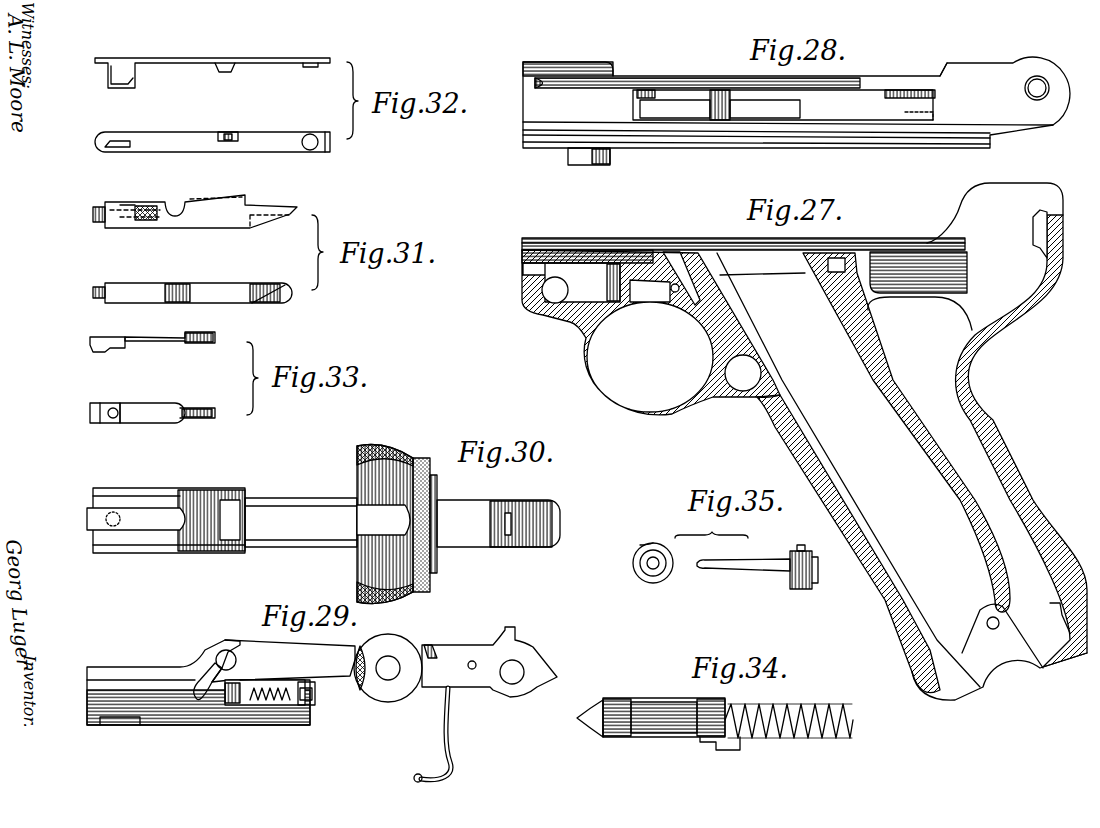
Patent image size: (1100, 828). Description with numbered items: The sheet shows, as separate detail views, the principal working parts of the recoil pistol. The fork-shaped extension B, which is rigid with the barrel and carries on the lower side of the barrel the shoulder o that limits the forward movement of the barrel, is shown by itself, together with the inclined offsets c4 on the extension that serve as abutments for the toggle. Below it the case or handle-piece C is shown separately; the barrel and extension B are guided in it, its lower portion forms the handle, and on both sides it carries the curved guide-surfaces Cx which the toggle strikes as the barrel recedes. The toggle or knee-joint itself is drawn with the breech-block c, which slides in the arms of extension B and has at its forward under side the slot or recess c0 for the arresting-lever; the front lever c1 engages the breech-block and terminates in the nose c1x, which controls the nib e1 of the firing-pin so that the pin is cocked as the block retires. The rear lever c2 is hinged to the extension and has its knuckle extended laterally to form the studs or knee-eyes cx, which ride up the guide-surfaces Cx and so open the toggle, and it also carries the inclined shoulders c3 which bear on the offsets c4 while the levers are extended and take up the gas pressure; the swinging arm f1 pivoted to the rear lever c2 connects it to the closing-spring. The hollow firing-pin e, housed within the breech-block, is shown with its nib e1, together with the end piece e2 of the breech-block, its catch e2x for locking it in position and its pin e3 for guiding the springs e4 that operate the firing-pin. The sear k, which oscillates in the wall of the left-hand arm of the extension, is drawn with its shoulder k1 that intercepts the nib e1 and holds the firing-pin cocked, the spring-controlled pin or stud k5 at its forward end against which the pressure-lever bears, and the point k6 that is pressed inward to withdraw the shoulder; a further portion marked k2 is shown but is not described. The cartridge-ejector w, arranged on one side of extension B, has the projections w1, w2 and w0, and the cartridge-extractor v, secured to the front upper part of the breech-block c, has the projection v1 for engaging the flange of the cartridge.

In FIG. 28, the fork-shaped barrel extension B is at (796, 102).
In FIG. 28, the shoulder o is at (578, 160).
In FIG. 28, the inclined offsets c4 is at (948, 70).
In FIG. 27, the handle-piece C is at (982, 345).
In FIG. 27, the curved guide-surfaces Cx is at (975, 215).
In FIG. 30, the breech-block c is at (172, 500).
In FIG. 29, the breech-block c is at (145, 675).
In FIG. 29, the slot or recess c0 is at (117, 722).
In FIG. 30, the front lever c1 is at (301, 522).
In FIG. 29, the front lever c1 is at (285, 660).
In FIG. 29, the nose c1x is at (210, 690).
In FIG. 30, the studs or knee-eyes cx is at (378, 475).
In FIG. 29, the studs or knee-eyes cx is at (388, 668).
In FIG. 30, the rear lever c2 is at (498, 523).
In FIG. 29, the rear lever c2 is at (489, 662).
In FIG. 30, the inclined shoulders c3 is at (437, 490).
In FIG. 29, the inclined shoulders c3 is at (427, 648).
In FIG. 34, the firing-pin e is at (655, 738).
In FIG. 29, the nib e1 is at (240, 700).
In FIG. 34, the nib e1 is at (725, 751).
In FIG. 29, the end piece e2 is at (312, 698).
In FIG. 35, the end piece e2 is at (668, 573).
In FIG. 35, the catch e2x is at (660, 545).
In FIG. 35, the pin e3 is at (640, 568).
In FIG. 29, the springs e4 is at (280, 705).
In FIG. 34, the springs e4 is at (828, 706).
In FIG. 29, the swinging arm f1 is at (450, 742).
In FIG. 33, the cartridge-extractor v is at (155, 341).
In FIG. 30, the cartridge-extractor v is at (140, 515).
In FIG. 33, the projection v1 is at (98, 352).
In FIG. 31, the sear k is at (210, 222).
In FIG. 31, the shoulder k1 is at (250, 196).
In FIG. 31, the sear bar bevel k2 is at (262, 228).
In FIG. 31, the spring-controlled pin or stud k5 is at (160, 226).
In FIG. 31, the point k6 is at (99, 223).
In FIG. 32, the cartridge-ejector w is at (200, 58).
In FIG. 32, the projection w0 is at (224, 72).
In FIG. 32, the projection w1 is at (130, 83).
In FIG. 32, the projection w2 is at (311, 68).